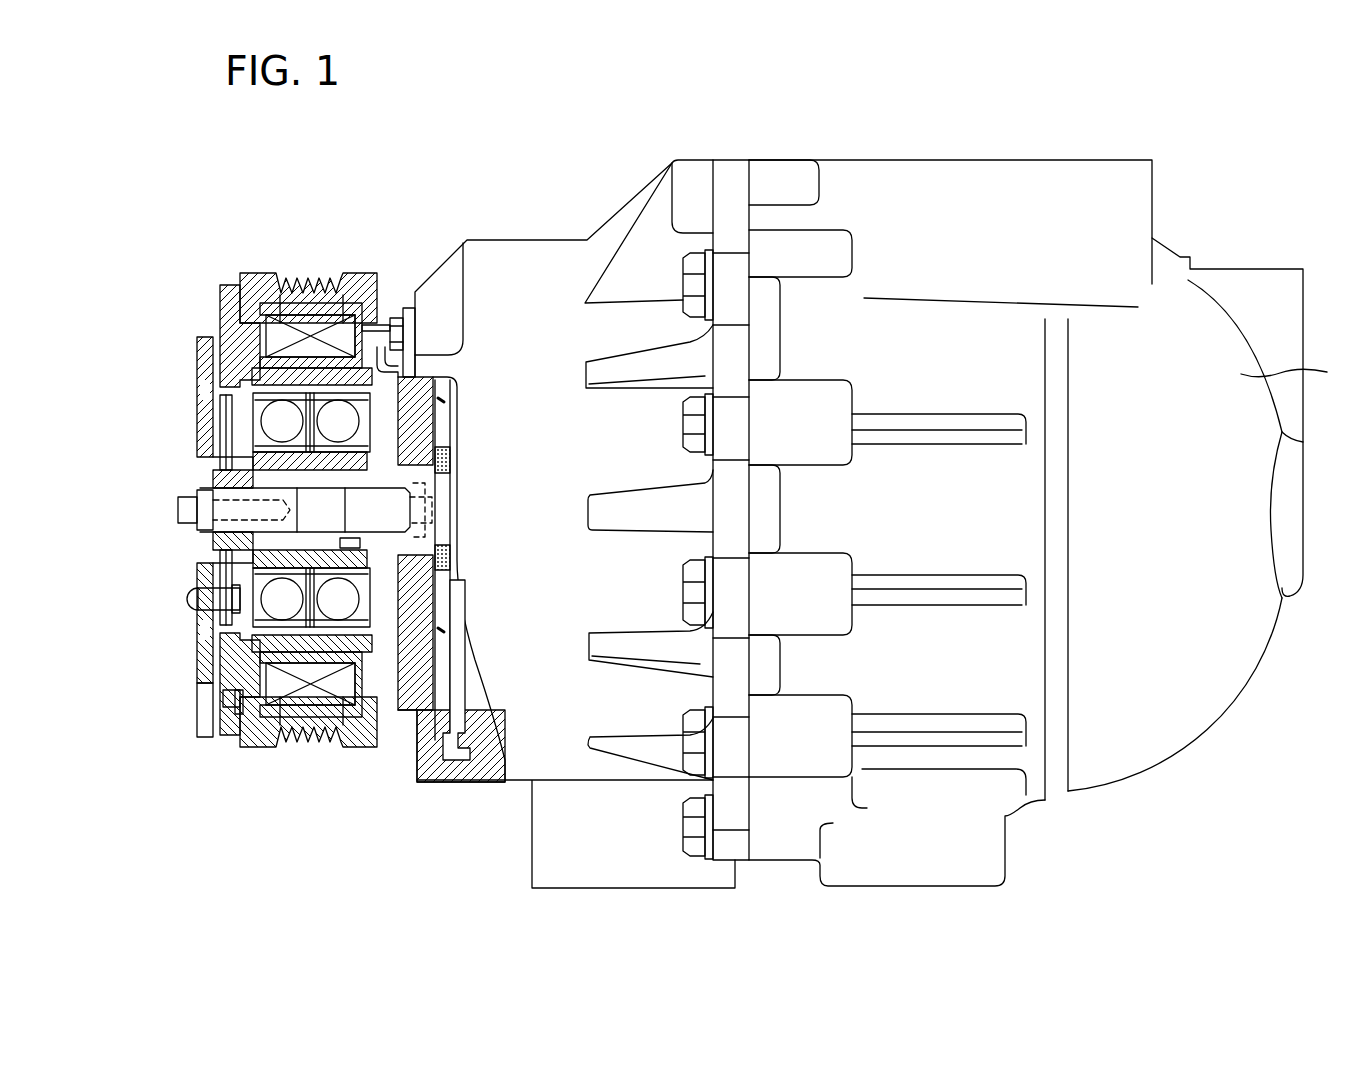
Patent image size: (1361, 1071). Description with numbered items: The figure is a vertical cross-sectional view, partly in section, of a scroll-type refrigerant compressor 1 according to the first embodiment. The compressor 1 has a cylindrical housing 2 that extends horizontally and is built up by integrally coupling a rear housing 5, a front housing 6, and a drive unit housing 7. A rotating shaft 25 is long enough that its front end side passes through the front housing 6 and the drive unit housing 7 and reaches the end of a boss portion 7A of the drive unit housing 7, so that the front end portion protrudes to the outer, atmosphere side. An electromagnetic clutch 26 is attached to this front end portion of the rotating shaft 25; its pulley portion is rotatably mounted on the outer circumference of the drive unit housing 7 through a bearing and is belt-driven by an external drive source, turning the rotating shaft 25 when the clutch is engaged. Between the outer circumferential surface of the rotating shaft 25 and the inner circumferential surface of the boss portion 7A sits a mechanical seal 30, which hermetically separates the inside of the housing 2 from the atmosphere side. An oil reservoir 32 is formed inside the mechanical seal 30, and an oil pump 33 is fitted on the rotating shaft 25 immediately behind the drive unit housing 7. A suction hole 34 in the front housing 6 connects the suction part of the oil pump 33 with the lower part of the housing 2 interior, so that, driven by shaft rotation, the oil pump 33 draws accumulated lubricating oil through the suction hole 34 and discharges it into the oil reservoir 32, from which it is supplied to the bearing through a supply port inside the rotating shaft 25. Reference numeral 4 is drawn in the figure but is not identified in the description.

The refrigerant compressor 1 is at (1217, 174).
The housing 2 is at (1054, 158).
The electromagnetic clutch 4 is at (255, 490).
The rear housing 5 is at (1294, 378).
The front housing 6 is at (529, 238).
The drive unit housing 7 is at (412, 700).
The boss portion 7A is at (253, 458).
The rotating shaft 25 is at (430, 512).
The electromagnetic clutch 26 is at (265, 268).
The mechanical seal 30 is at (357, 550).
The oil reservoir 32 is at (415, 548).
The oil pump 33 is at (445, 562).
The suction hole 34 is at (455, 712).